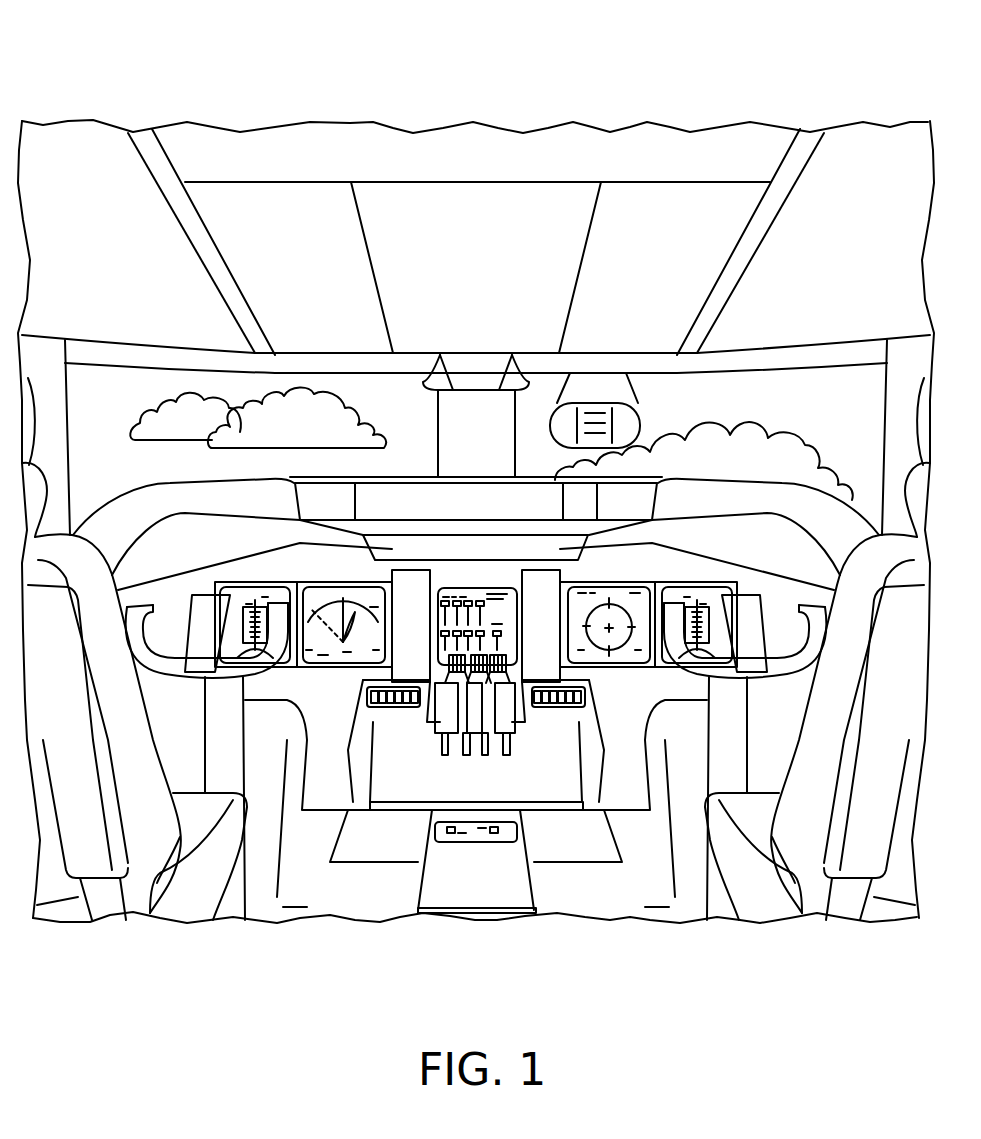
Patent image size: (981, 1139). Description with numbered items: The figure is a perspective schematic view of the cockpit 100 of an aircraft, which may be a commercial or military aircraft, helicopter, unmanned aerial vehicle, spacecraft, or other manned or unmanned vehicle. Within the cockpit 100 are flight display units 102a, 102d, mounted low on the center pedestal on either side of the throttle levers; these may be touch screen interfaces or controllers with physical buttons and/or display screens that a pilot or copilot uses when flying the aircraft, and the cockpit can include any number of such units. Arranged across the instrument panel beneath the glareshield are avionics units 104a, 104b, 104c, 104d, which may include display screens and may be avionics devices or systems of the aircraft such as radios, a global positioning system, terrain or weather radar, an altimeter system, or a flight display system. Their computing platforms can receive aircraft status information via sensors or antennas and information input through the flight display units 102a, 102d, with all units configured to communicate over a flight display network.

The cockpit 100 is at (129, 40).
The flight display unit 102a is at (363, 706).
The flight display unit 102d is at (549, 706).
The avionics unit 104a is at (228, 584).
The avionics unit 104b is at (311, 584).
The avionics unit 104c is at (570, 581).
The avionics unit 104d is at (716, 593).